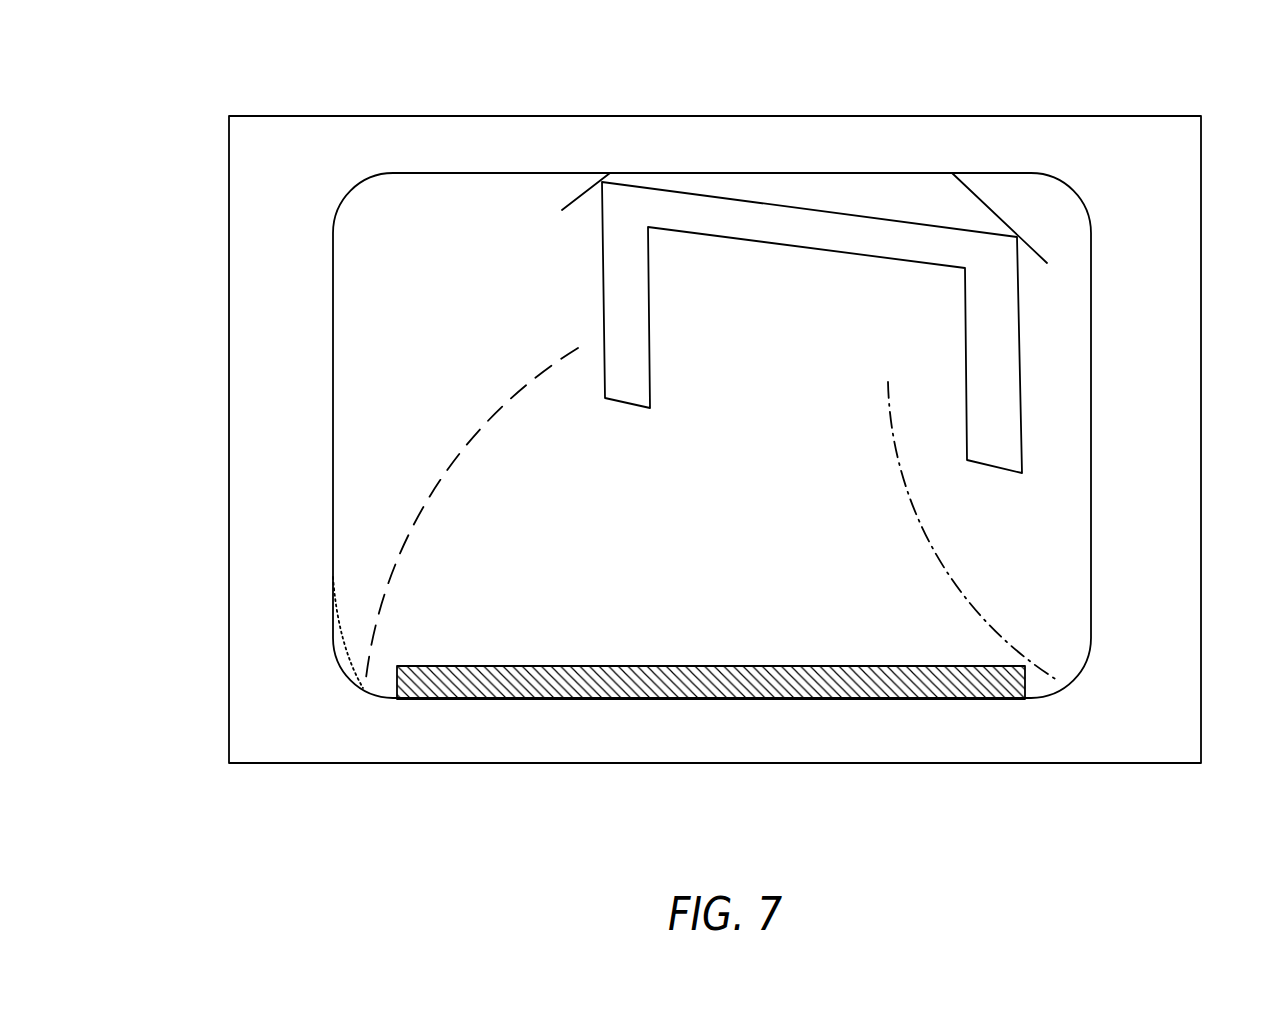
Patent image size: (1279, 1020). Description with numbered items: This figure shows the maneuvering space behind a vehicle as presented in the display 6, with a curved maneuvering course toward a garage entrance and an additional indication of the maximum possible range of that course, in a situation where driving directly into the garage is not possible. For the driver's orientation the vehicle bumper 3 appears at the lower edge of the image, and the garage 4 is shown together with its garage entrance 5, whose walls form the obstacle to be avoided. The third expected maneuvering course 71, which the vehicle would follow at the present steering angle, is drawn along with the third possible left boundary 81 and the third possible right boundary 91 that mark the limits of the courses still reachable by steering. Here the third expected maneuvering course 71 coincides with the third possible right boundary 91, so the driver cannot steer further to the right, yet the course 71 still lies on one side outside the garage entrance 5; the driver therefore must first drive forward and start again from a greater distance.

The vehicle bumper 3 is at (480, 679).
The garage 4 is at (613, 292).
The garage entrance 5 is at (771, 360).
The display 6 is at (313, 155).
The third expected maneuvering course 71 is at (943, 565).
The third possible left boundary 81 is at (343, 638).
The third possible right boundary 91 is at (933, 547).